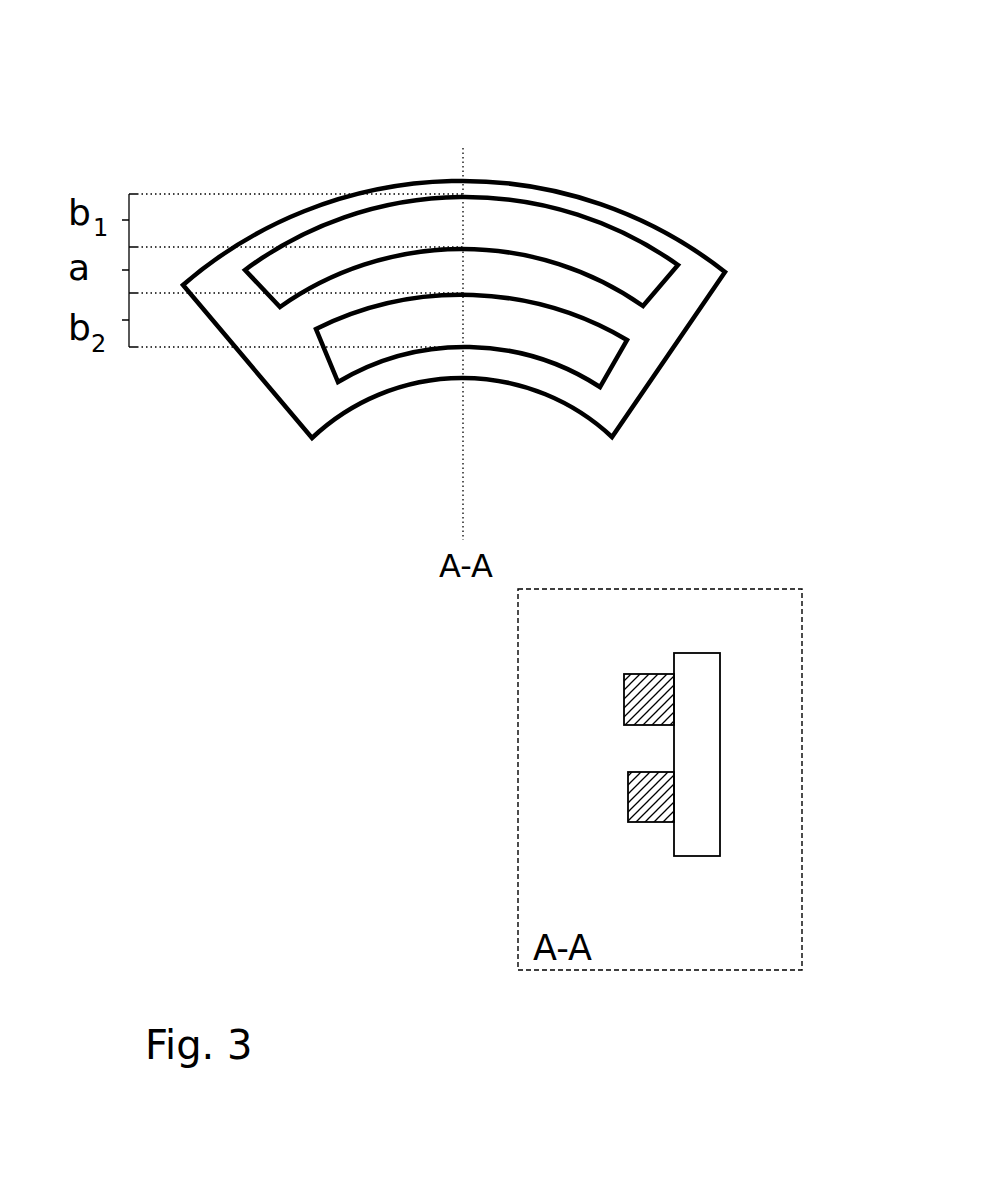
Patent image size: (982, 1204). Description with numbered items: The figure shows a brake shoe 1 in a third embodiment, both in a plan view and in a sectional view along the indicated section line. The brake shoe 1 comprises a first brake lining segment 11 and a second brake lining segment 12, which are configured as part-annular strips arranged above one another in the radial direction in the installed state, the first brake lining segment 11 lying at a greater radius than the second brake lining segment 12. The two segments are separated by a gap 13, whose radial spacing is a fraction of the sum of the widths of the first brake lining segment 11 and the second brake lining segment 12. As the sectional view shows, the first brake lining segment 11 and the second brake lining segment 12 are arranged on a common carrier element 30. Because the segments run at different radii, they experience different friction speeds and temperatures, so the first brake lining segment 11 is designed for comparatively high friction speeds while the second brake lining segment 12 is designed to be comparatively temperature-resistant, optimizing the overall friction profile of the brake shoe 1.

The brake shoe 1 is at (617, 110).
The first brake lining segment 11 is at (486, 218).
The second brake lining segment 12 is at (537, 337).
The gap 13 is at (548, 293).
The carrier element 30 is at (692, 678).